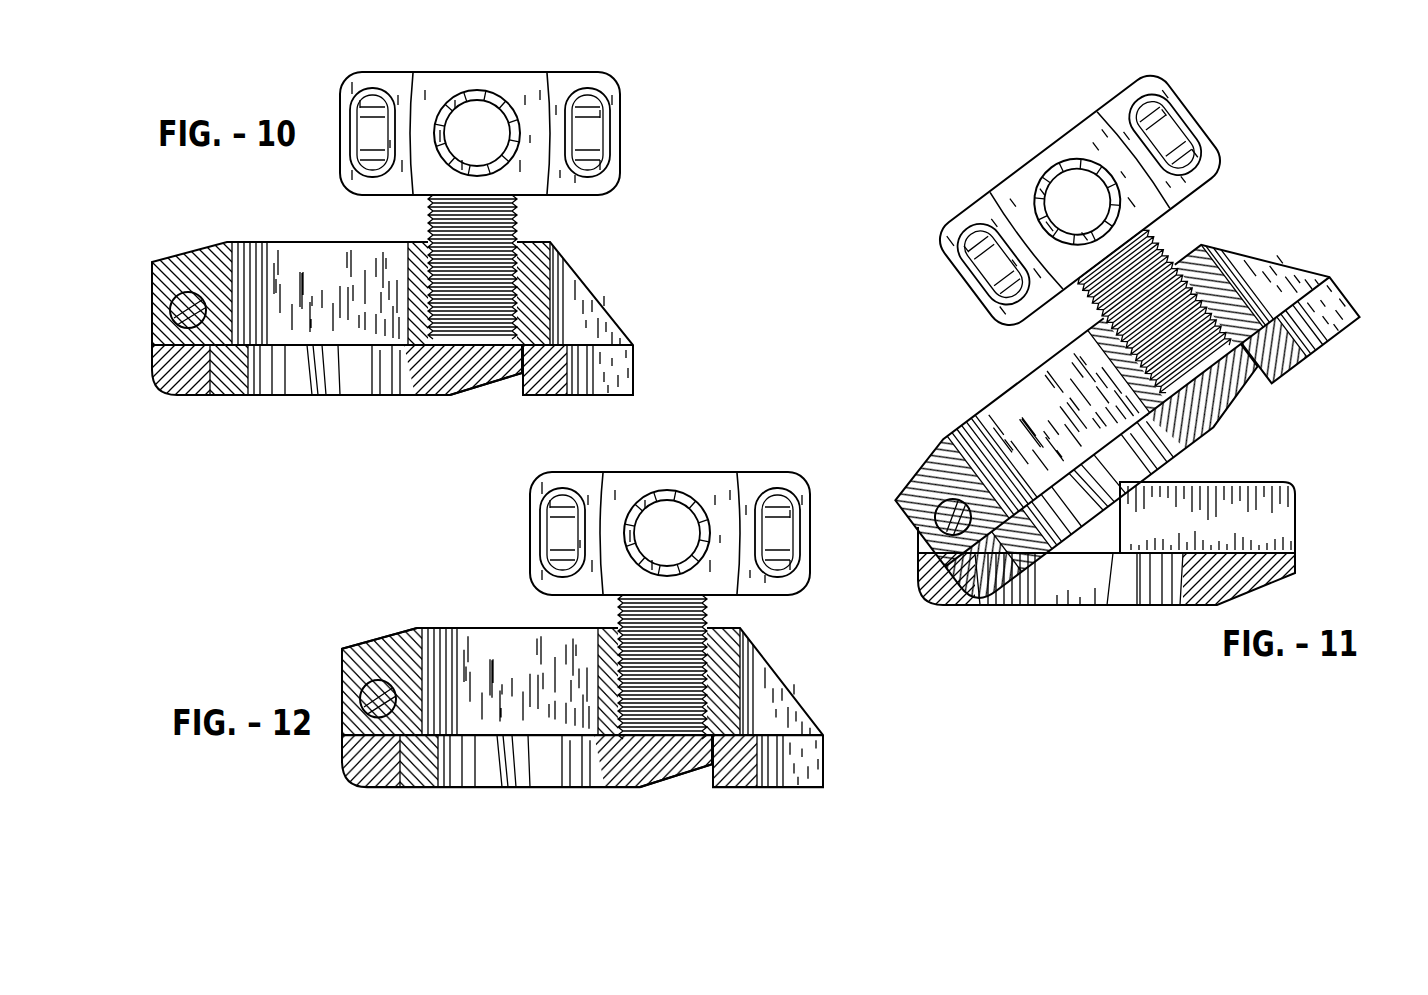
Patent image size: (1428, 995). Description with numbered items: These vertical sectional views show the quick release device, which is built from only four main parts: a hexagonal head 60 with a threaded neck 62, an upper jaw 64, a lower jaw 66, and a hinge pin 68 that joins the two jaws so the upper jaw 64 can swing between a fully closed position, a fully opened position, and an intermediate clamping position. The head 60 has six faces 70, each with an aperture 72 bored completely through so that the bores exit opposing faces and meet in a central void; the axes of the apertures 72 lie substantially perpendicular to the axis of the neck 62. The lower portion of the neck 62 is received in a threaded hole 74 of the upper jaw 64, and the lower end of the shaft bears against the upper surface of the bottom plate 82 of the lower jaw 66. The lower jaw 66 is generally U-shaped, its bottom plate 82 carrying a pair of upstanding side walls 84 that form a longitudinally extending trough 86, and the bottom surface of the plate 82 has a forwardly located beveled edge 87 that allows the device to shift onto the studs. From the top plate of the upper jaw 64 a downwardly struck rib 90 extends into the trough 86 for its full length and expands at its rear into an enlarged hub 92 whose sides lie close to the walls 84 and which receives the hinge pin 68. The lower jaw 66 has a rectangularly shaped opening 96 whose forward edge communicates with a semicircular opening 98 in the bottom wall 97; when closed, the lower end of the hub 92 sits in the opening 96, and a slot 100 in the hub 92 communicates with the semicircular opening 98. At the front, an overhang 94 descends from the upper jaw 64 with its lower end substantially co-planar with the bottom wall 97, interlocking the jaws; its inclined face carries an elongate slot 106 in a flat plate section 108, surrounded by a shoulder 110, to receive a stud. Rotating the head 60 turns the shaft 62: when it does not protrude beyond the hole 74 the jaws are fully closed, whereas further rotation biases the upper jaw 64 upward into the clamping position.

In FIG. 10, the hexagonal head 60 is at (504, 99).
In FIG. 12, the hexagonal head 60 is at (670, 502).
In FIG. 11, the hexagonal head 60 is at (1072, 199).
In FIG. 10, the threaded neck 62 is at (520, 215).
In FIG. 12, the threaded neck 62 is at (708, 618).
In FIG. 11, the threaded neck 62 is at (1170, 237).
In FIG. 12, the upper jaw 64 is at (362, 622).
In FIG. 10, the lower jaw 66 is at (420, 350).
In FIG. 12, the lower jaw 66 is at (601, 706).
In FIG. 11, the lower jaw 66 is at (1127, 429).
In FIG. 10, the hinge pin 68 is at (178, 310).
In FIG. 12, the hinge pin 68 is at (367, 700).
In FIG. 11, the hinge pin 68 is at (940, 518).
In FIG. 10, the face 70 is at (590, 85).
In FIG. 12, the face 70 is at (728, 487).
In FIG. 11, the face 70 is at (1093, 147).
In FIG. 10, the aperture 72 is at (497, 128).
In FIG. 12, the aperture 72 is at (683, 525).
In FIG. 11, the aperture 72 is at (1057, 192).
In FIG. 10, the threaded hole 74 is at (530, 242).
In FIG. 12, the threaded hole 74 is at (608, 632).
In FIG. 11, the threaded hole 74 is at (1153, 388).
In FIG. 10, the bottom plate 82 is at (172, 397).
In FIG. 12, the bottom plate 82 is at (353, 777).
In FIG. 11, the side walls 84 is at (1185, 495).
In FIG. 11, the trough 86 is at (1280, 548).
In FIG. 10, the beveled edge 87 is at (478, 388).
In FIG. 12, the beveled edge 87 is at (663, 788).
In FIG. 10, the rib 90 is at (420, 243).
In FIG. 10, the hub 92 is at (235, 397).
In FIG. 12, the hub 92 is at (417, 782).
In FIG. 11, the hub 92 is at (1030, 570).
In FIG. 10, the frontal overhang 94 is at (628, 323).
In FIG. 12, the frontal overhang 94 is at (818, 712).
In FIG. 10, the rectangularly shaped opening 96 is at (303, 397).
In FIG. 12, the rectangularly shaped opening 96 is at (470, 780).
In FIG. 11, the rectangularly shaped opening 96 is at (1000, 597).
In FIG. 10, the bottom wall 97 is at (425, 397).
In FIG. 12, the bottom wall 97 is at (615, 798).
In FIG. 12, the semicircular opening 98 is at (563, 783).
In FIG. 11, the semicircular opening 98 is at (1143, 593).
In FIG. 10, the slot 100 is at (277, 265).
In FIG. 12, the slot 100 is at (475, 638).
In FIG. 11, the slot 100 is at (987, 410).
In FIG. 10, the elongate slot 106 is at (627, 378).
In FIG. 12, the elongate slot 106 is at (813, 763).
In FIG. 11, the elongate slot 106 is at (1337, 313).
In FIG. 10, the flat plate section 108 is at (528, 390).
In FIG. 10, the shoulder 110 is at (575, 345).
In FIG. 11, the shoulder 110 is at (1273, 307).